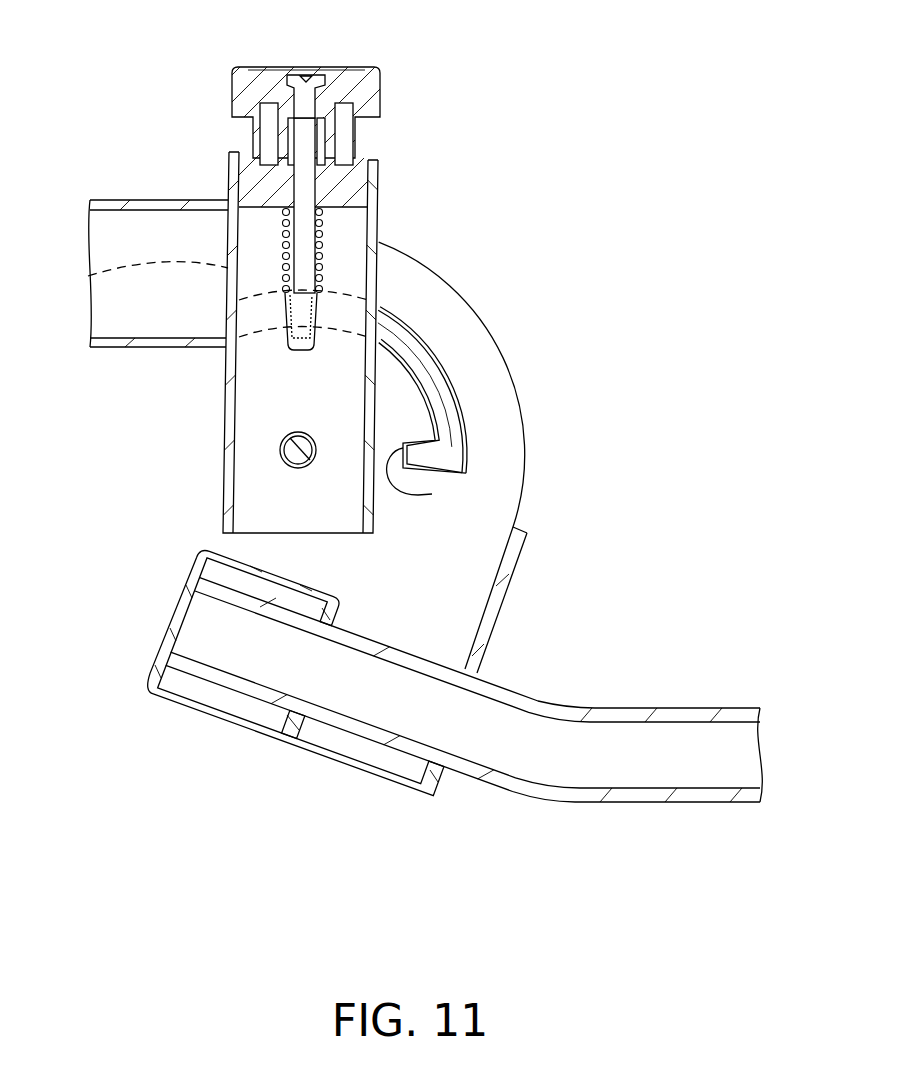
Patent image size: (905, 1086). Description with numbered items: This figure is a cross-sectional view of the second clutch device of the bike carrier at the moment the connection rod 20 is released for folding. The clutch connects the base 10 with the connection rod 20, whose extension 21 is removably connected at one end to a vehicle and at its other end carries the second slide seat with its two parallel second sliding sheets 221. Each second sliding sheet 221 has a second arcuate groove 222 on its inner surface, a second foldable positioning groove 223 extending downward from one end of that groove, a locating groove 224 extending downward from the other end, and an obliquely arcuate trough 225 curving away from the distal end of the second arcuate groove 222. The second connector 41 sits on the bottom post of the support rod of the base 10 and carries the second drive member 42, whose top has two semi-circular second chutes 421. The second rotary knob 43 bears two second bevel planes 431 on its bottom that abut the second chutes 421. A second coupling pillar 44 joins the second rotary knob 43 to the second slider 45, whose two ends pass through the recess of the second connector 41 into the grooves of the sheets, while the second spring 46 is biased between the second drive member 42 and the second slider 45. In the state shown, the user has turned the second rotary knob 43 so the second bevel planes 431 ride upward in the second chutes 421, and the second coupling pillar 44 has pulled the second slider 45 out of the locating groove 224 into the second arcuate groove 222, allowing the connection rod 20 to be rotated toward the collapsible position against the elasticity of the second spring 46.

The base 10 is at (130, 196).
The connection rod 20 is at (477, 795).
The extension 21 is at (627, 800).
The second sliding sheets 221 is at (467, 567).
The second arcuate groove 222 is at (460, 400).
The second foldable positioning groove 223 is at (432, 494).
The locating groove 224 is at (300, 352).
The obliquely arcuate trough 225 is at (202, 299).
The second connector 41 is at (233, 390).
The second drive member 42 is at (262, 193).
The second rotary knob 43 is at (265, 92).
The second bevel planes 431 is at (336, 153).
The second chutes 421 is at (335, 195).
The second coupling pillar 44 is at (307, 230).
The second slider 45 is at (290, 292).
The second spring 46 is at (324, 255).